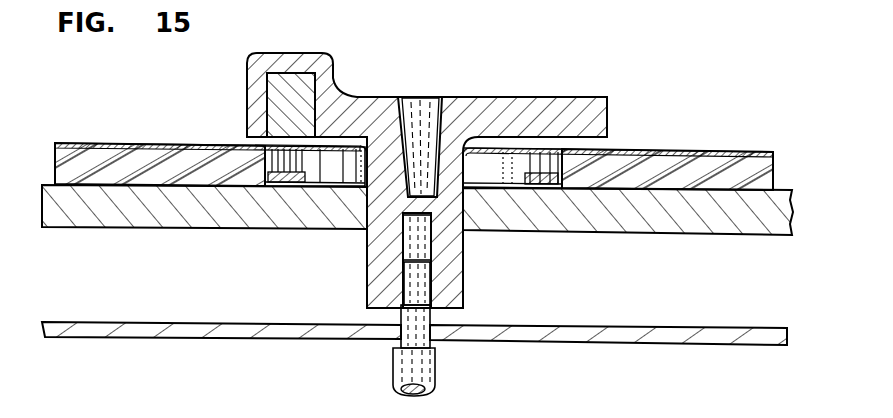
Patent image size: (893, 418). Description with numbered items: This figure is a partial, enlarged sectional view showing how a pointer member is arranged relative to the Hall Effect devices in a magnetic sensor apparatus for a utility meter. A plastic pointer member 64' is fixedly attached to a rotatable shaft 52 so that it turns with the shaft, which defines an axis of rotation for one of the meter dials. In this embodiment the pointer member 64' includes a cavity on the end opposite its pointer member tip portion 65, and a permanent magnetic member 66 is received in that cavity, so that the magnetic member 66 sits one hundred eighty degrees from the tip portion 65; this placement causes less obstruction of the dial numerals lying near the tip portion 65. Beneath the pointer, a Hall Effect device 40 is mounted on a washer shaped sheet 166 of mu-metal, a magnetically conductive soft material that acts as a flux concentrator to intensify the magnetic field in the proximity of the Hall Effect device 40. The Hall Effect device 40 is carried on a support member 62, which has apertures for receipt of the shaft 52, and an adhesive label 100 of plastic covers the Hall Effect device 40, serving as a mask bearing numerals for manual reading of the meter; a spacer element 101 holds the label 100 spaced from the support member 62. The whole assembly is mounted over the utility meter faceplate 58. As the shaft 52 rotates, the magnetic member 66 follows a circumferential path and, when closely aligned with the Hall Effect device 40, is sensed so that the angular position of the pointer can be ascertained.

The plastic pointer member 64' is at (427, 164).
The permanent magnetic member 66 is at (276, 103).
The pointer member tip portion 65 is at (591, 101).
The adhesive label 100 is at (657, 118).
The spacer element 101 is at (768, 119).
The support member 62 is at (262, 222).
The washer shaped sheet of mu-metal 166 is at (495, 190).
The Hall Effect device 40 is at (550, 190).
The rotatable shaft 52 is at (410, 283).
The utility meter faceplate 58 is at (705, 328).